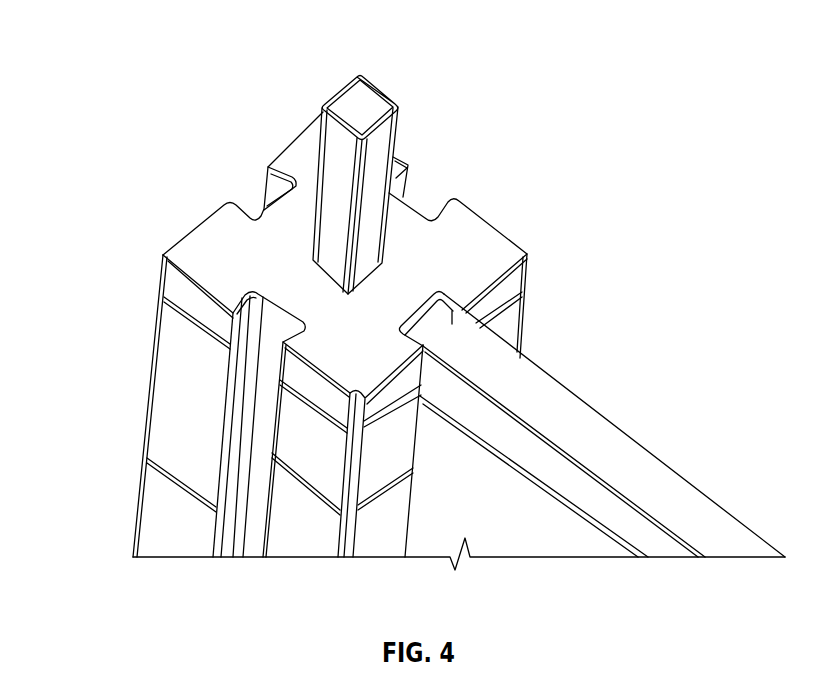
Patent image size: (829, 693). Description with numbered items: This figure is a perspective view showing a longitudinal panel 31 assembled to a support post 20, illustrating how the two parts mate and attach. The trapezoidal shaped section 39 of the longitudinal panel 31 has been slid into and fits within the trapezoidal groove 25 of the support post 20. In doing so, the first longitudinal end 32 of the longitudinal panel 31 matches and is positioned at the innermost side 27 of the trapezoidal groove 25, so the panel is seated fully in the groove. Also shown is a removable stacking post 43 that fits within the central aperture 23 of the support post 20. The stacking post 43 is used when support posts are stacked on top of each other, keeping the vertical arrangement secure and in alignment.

The support post 20 is at (100, 386).
The central aperture 23 is at (315, 242).
The trapezoidal groove 25 is at (265, 393).
The innermost side 27 is at (420, 293).
The longitudinal panel 31 is at (552, 360).
The first longitudinal end 32 is at (410, 318).
The trapezoidal shaped section 39 is at (460, 294).
The removable stacking post 43 is at (348, 98).